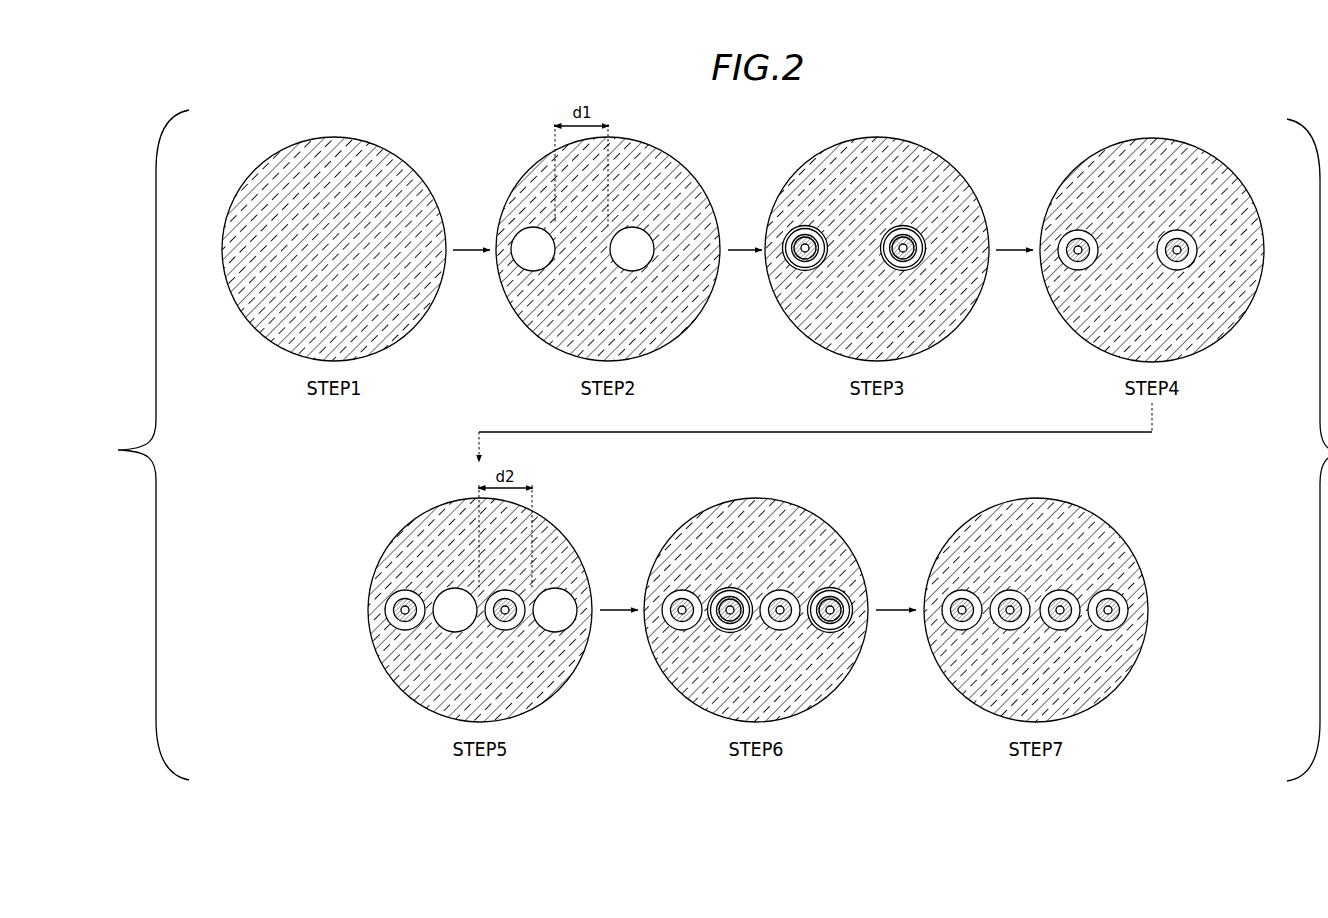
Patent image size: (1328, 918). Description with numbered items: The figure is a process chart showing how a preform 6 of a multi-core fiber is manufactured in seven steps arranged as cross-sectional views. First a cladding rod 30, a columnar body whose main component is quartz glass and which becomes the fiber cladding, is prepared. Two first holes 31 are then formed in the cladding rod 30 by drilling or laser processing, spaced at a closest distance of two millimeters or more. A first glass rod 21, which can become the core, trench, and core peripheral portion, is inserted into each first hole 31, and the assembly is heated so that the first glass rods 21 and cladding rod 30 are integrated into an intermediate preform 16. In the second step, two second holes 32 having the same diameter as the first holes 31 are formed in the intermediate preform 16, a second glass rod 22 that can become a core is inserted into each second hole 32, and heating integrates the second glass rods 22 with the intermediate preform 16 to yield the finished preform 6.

The cladding rod 30 is at (272, 152).
The first hole 31 is at (535, 266).
The first glass rod 21 is at (820, 227).
The intermediate preform 16 is at (1217, 132).
The second hole 32 is at (447, 624).
The second glass rod 22 is at (725, 588).
The preform 6 is at (1156, 546).